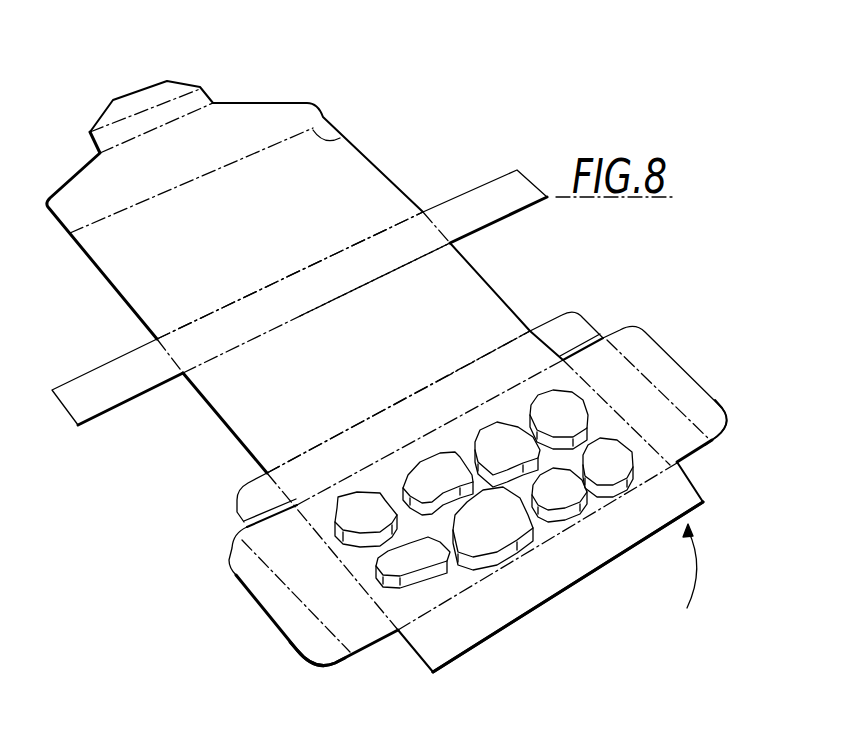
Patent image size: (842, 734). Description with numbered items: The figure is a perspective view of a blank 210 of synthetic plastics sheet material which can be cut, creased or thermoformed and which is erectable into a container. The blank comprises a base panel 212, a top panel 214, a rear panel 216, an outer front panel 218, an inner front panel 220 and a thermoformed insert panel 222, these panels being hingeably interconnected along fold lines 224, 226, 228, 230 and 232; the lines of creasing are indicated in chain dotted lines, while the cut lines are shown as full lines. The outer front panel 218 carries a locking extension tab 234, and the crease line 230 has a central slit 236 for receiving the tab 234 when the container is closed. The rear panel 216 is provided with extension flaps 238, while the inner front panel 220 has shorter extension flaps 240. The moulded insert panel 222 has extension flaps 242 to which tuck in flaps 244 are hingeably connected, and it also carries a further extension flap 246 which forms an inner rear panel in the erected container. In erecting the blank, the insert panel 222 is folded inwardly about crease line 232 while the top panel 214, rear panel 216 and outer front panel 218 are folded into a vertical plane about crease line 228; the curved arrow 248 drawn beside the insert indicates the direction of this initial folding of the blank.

The blank 210 is at (213, 427).
The base panel 212 is at (325, 379).
The top panel 214 is at (267, 244).
The rear panel 216 is at (290, 319).
The outer front panel 218 is at (210, 159).
The inner front panel 220 is at (397, 450).
The thermoformed insert panel 222 is at (413, 650).
The fold line 224 is at (340, 138).
The fold line 226 is at (191, 329).
The fold line 228 is at (383, 281).
The fold line 230 is at (483, 371).
The fold line 232 is at (481, 383).
The locking extension tab 234 is at (196, 89).
The central slit 236 is at (397, 407).
The extension flaps 238 is at (481, 196).
The shorter extension flaps 240 is at (593, 330).
The extension flaps 242 is at (668, 410).
The tuck in flaps 244 is at (645, 343).
The further extension flap 246 is at (528, 595).
The fold direction arrow 248 is at (690, 562).